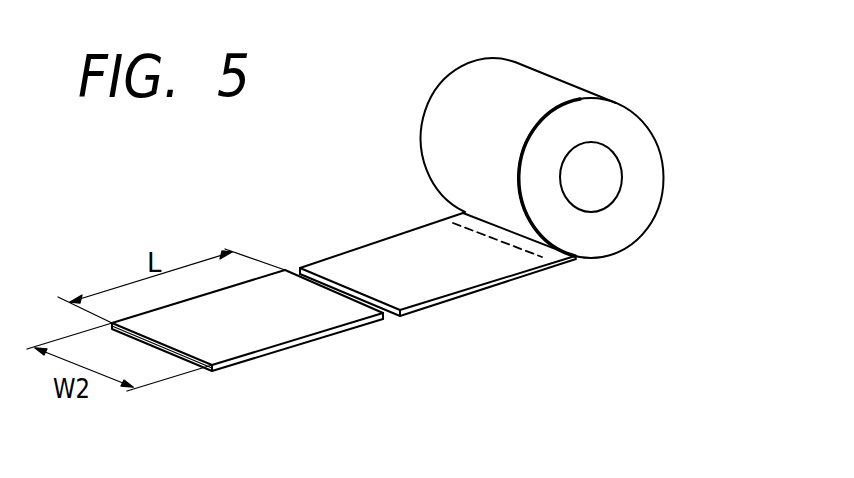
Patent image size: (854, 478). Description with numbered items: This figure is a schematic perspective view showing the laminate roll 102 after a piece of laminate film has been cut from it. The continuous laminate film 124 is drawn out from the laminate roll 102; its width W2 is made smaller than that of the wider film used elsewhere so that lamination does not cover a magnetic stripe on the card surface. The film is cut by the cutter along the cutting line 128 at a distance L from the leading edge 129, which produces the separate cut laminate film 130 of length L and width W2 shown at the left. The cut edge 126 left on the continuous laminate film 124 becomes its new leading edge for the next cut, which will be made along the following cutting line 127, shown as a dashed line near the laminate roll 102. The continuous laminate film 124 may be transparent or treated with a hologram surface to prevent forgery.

The laminate roll 102 is at (536, 90).
The continuous laminate film 124 is at (443, 262).
The cut edge 126 is at (386, 314).
The cutting line 127 is at (457, 224).
The cutting line 128 is at (280, 269).
The leading edge 129 is at (130, 340).
The cut laminate film 130 is at (242, 335).